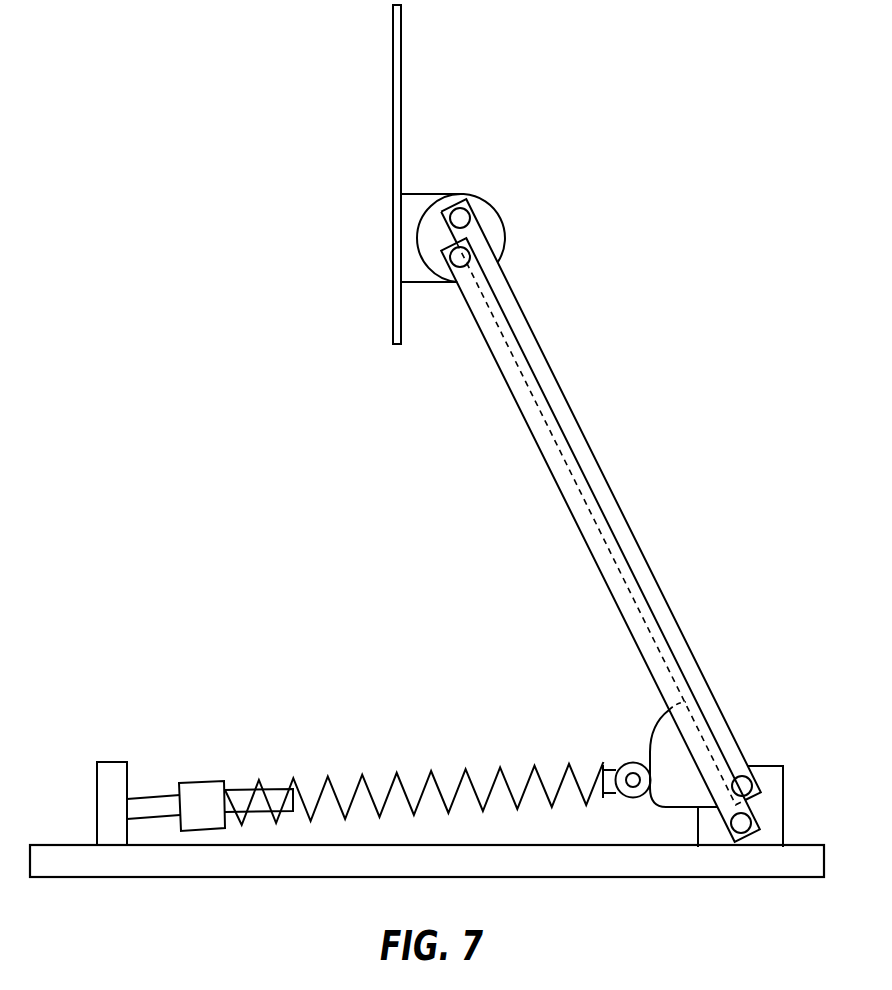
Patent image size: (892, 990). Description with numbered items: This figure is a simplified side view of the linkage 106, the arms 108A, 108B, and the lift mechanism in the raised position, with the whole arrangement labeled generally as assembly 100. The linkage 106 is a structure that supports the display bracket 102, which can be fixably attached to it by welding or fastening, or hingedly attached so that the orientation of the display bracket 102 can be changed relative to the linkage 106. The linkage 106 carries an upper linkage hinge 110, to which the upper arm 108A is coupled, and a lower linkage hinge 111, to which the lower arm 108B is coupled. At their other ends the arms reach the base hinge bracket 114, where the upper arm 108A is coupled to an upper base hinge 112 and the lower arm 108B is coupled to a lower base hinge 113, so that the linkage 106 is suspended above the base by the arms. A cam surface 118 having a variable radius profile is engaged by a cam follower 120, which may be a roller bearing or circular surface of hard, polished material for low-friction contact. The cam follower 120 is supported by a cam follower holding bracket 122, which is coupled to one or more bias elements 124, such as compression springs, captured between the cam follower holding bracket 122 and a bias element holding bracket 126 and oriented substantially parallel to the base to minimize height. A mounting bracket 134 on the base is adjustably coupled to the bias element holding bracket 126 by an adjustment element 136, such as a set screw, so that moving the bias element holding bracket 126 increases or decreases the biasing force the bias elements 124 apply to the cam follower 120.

The display support assembly 100 is at (722, 102).
The display bracket 102 is at (393, 171).
The linkage 106 is at (461, 194).
The upper arm 108A is at (568, 403).
The lower arm 108B is at (544, 458).
The upper linkage hinge 110 is at (469, 217).
The lower linkage hinge 111 is at (469, 256).
The upper base hinge 112 is at (753, 785).
The lower base hinge 113 is at (752, 823).
The base hinge bracket 114 is at (764, 766).
The cam surface 118 is at (653, 731).
The cam follower 120 is at (630, 763).
The cam follower holding bracket 122 is at (607, 797).
The bias elements 124 is at (435, 778).
The bias element holding bracket 126 is at (200, 782).
The mounting bracket 134 is at (112, 762).
The adjustment element 136 is at (154, 796).